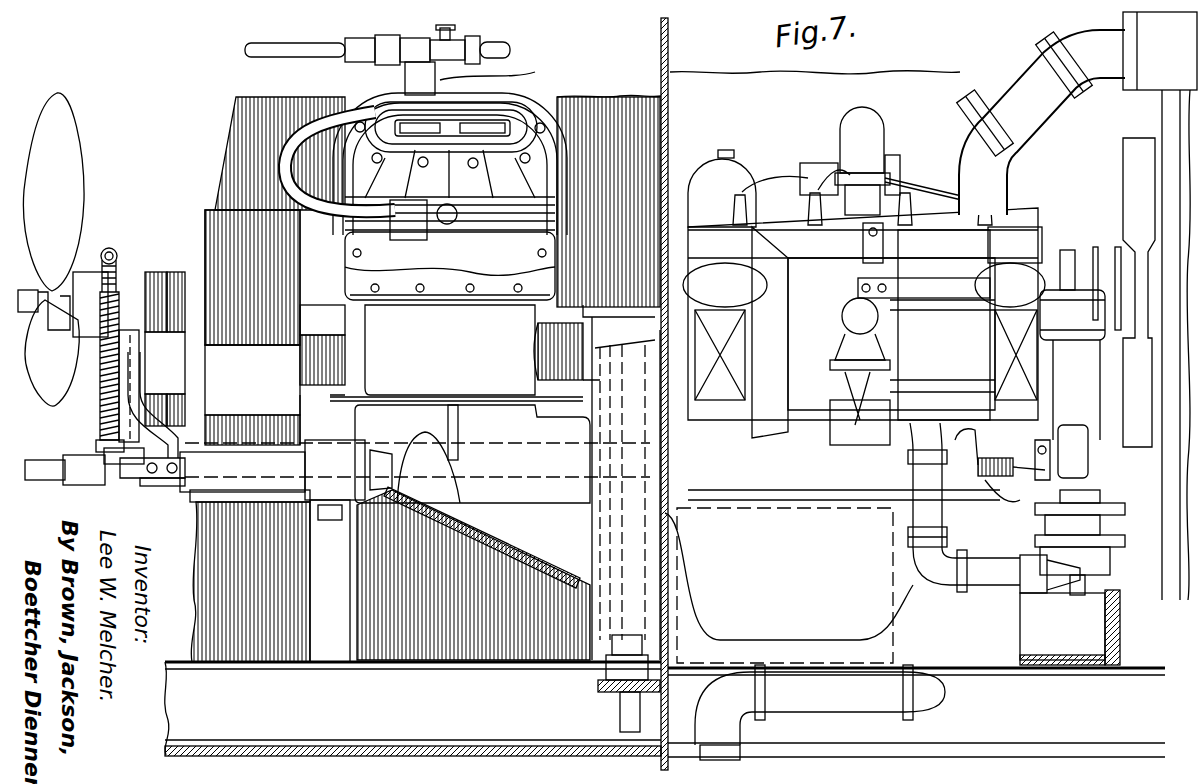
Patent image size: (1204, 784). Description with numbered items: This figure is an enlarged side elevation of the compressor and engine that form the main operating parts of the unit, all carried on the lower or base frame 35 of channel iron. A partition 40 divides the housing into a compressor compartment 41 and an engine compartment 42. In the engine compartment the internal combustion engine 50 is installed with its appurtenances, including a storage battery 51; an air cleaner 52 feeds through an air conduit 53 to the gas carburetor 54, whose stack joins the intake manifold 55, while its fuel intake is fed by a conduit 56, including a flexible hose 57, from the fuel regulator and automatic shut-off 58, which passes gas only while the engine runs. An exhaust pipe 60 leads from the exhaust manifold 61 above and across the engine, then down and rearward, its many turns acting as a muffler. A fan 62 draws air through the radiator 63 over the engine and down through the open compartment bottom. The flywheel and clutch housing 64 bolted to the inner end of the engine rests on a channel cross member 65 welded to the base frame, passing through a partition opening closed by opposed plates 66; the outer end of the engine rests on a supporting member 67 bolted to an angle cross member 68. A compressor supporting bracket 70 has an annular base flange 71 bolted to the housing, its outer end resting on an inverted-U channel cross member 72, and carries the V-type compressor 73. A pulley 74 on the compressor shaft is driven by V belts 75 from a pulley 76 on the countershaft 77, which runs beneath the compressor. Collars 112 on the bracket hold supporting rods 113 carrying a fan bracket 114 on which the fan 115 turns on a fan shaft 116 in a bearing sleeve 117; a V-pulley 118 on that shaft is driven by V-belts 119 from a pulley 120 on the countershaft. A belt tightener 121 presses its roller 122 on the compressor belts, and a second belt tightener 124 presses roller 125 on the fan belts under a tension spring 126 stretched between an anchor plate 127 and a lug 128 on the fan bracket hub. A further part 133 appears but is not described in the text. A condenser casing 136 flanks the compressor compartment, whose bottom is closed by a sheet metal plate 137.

The base frame 35 is at (448, 705).
The partition 40 is at (661, 92).
The compressor compartment 41 is at (582, 44).
The engine compartment 42 is at (714, 44).
The internal combustion engine 50 is at (1022, 210).
The storage battery 51 is at (880, 612).
The air cleaner 52 is at (962, 372).
The air conduit 53 is at (770, 358).
The gas carburetor 54 is at (830, 384).
The intake manifold 55 is at (838, 312).
The conduit 56 is at (912, 438).
The flexible hose 57 is at (946, 515).
The fuel regulator and automatic shut-off 58 is at (1040, 536).
The exhaust pipe 60 is at (860, 126).
The exhaust manifold 61 is at (722, 292).
The fan 62 is at (1162, 110).
The engine radiator 63 is at (1125, 190).
The flywheel and clutch housing 64 is at (598, 618).
The channel cross member 65 is at (598, 684).
The opposed plates 66 is at (662, 586).
The supporting member 67 is at (1030, 620).
The angle cross member 68 is at (1118, 620).
The compressor supporting bracket 70 is at (528, 508).
The annular base flange 71 is at (585, 354).
The channel cross member 72 is at (336, 552).
The V-type compressor 73 is at (555, 240).
The pulley 74 is at (206, 214).
The V belts 75 is at (256, 214).
The V belt pulley 76 is at (210, 505).
The countershaft 77 is at (418, 446).
The collar 112 is at (354, 452).
The supporting rods 113 is at (63, 470).
The fan bracket 114 is at (110, 432).
The fan 115 is at (75, 150).
The fan shaft 116 is at (26, 288).
The bearing sleeve 117 is at (128, 272).
The V-pulley 118 is at (185, 272).
The V-belts 119 is at (156, 272).
The pulley 120 is at (238, 459).
The belt tightener 121 is at (272, 512).
The roller 122 is at (300, 376).
The second belt tightener 124 is at (176, 486).
The roller 125 is at (102, 404).
The tension spring 126 is at (100, 380).
The anchor plate 127 is at (140, 480).
The lug 128 is at (111, 248).
The pipe 133 is at (298, 42).
The casing 136 is at (218, 596).
The sheet metal plate 137 is at (340, 746).